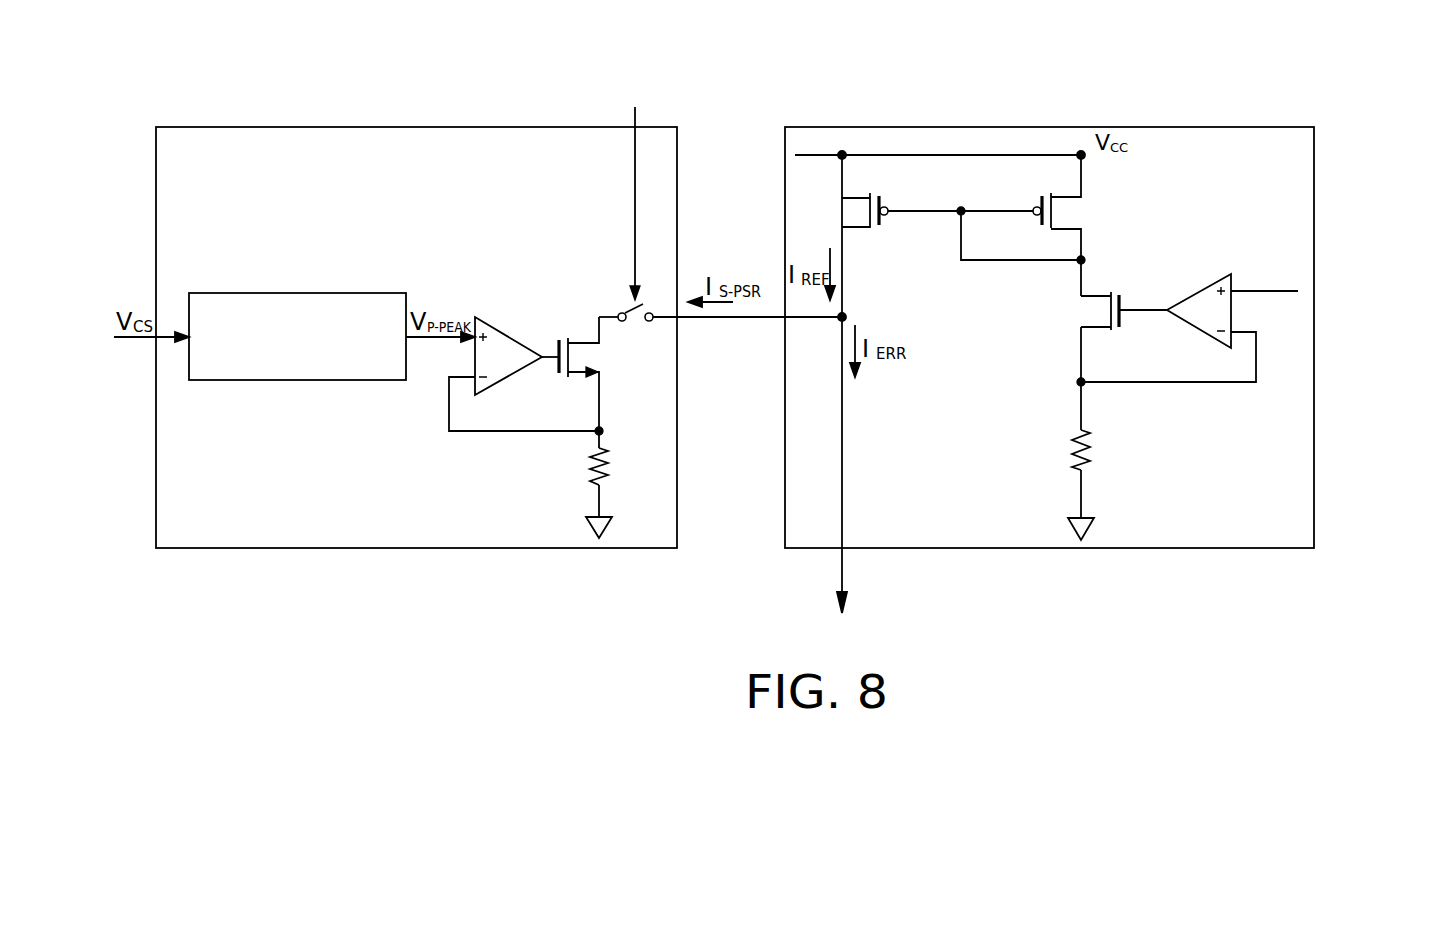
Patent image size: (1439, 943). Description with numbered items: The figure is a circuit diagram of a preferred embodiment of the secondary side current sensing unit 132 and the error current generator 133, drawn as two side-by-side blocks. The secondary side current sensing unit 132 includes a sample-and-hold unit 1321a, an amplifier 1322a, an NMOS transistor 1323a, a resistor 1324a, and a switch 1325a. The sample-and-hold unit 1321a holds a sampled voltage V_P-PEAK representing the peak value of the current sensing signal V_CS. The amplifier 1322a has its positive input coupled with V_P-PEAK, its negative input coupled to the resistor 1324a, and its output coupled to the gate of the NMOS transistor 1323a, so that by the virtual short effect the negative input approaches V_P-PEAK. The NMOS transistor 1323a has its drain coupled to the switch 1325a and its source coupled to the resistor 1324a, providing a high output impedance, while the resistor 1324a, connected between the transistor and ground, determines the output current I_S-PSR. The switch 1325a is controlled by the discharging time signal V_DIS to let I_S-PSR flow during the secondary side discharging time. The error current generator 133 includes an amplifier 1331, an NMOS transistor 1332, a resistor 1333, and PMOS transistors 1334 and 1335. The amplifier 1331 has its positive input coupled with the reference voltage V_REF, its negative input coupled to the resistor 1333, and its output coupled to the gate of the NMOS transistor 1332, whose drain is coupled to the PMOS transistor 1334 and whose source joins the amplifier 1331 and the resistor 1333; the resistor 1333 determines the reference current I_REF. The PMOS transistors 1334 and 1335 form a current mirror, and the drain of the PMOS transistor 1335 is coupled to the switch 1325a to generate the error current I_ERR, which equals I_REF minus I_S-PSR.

The secondary side current sensing unit 132 is at (372, 127).
The error current generator 133 is at (1314, 157).
The sample-and-hold unit 1321a is at (283, 293).
The amplifier 1322a is at (510, 327).
The NMOS transistor 1323a is at (599, 357).
The resistor 1324a is at (588, 466).
The switch 1325a is at (630, 302).
The amplifier 1331 is at (1198, 288).
The NMOS transistor 1332 is at (1087, 310).
The resistor 1333 is at (1072, 441).
The PMOS transistor 1334 is at (1080, 213).
The PMOS transistor 1335 is at (866, 230).